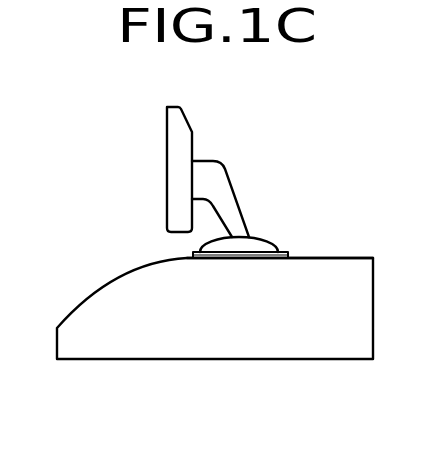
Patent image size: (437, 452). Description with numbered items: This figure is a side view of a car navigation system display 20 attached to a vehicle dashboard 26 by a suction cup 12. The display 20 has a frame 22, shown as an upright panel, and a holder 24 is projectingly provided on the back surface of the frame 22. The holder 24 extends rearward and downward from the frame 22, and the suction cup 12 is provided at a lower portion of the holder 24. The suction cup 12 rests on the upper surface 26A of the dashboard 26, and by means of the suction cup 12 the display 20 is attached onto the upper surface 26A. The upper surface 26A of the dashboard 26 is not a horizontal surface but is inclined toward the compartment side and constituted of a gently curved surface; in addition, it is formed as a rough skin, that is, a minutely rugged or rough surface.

The suction cup 12 is at (272, 240).
The display 20 is at (136, 150).
The frame 22 is at (180, 145).
The holder 24 is at (213, 177).
The dashboard 26 is at (118, 277).
The upper surface 26A is at (355, 257).